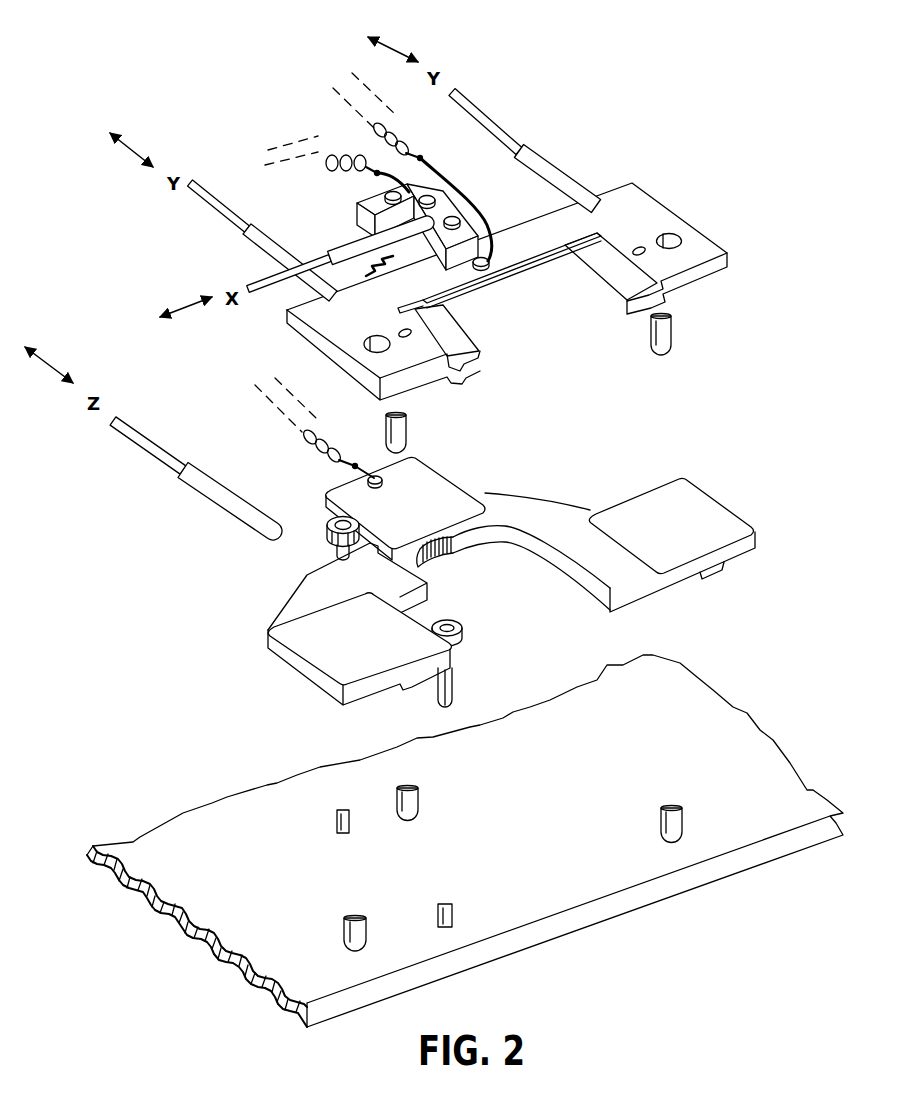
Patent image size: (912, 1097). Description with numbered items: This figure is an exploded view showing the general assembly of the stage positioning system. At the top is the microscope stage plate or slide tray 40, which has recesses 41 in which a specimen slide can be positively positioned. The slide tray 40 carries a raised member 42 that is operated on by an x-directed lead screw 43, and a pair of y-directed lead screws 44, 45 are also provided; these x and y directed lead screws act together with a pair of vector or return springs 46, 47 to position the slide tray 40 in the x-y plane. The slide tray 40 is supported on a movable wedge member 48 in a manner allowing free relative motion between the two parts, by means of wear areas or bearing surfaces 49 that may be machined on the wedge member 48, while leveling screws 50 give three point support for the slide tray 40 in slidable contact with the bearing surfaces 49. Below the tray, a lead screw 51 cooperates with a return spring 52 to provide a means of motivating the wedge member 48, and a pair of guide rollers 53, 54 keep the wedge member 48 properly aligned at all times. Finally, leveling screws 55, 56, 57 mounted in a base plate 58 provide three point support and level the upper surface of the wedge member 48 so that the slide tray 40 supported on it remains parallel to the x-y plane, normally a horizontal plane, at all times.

The slide tray 40 is at (686, 207).
The recesses 41 is at (442, 335).
The raised member 42 is at (447, 239).
The x-directed lead screw 43 is at (317, 252).
The y-directed lead screw 44 is at (202, 218).
The y-directed lead screw 45 is at (488, 97).
The vector or return spring 46 is at (406, 129).
The vector or return spring 47 is at (331, 150).
The wedge member 48 is at (713, 490).
The bearing surfaces 49 is at (431, 487).
The leveling screws 50 is at (670, 328).
The lead screw 51 is at (152, 427).
The return spring 52 is at (358, 450).
The guide roller 53 is at (326, 527).
The guide roller 54 is at (463, 637).
The leveling screw 55 is at (370, 933).
The leveling screw 56 is at (420, 803).
The leveling screw 57 is at (683, 822).
The base plate 58 is at (612, 885).